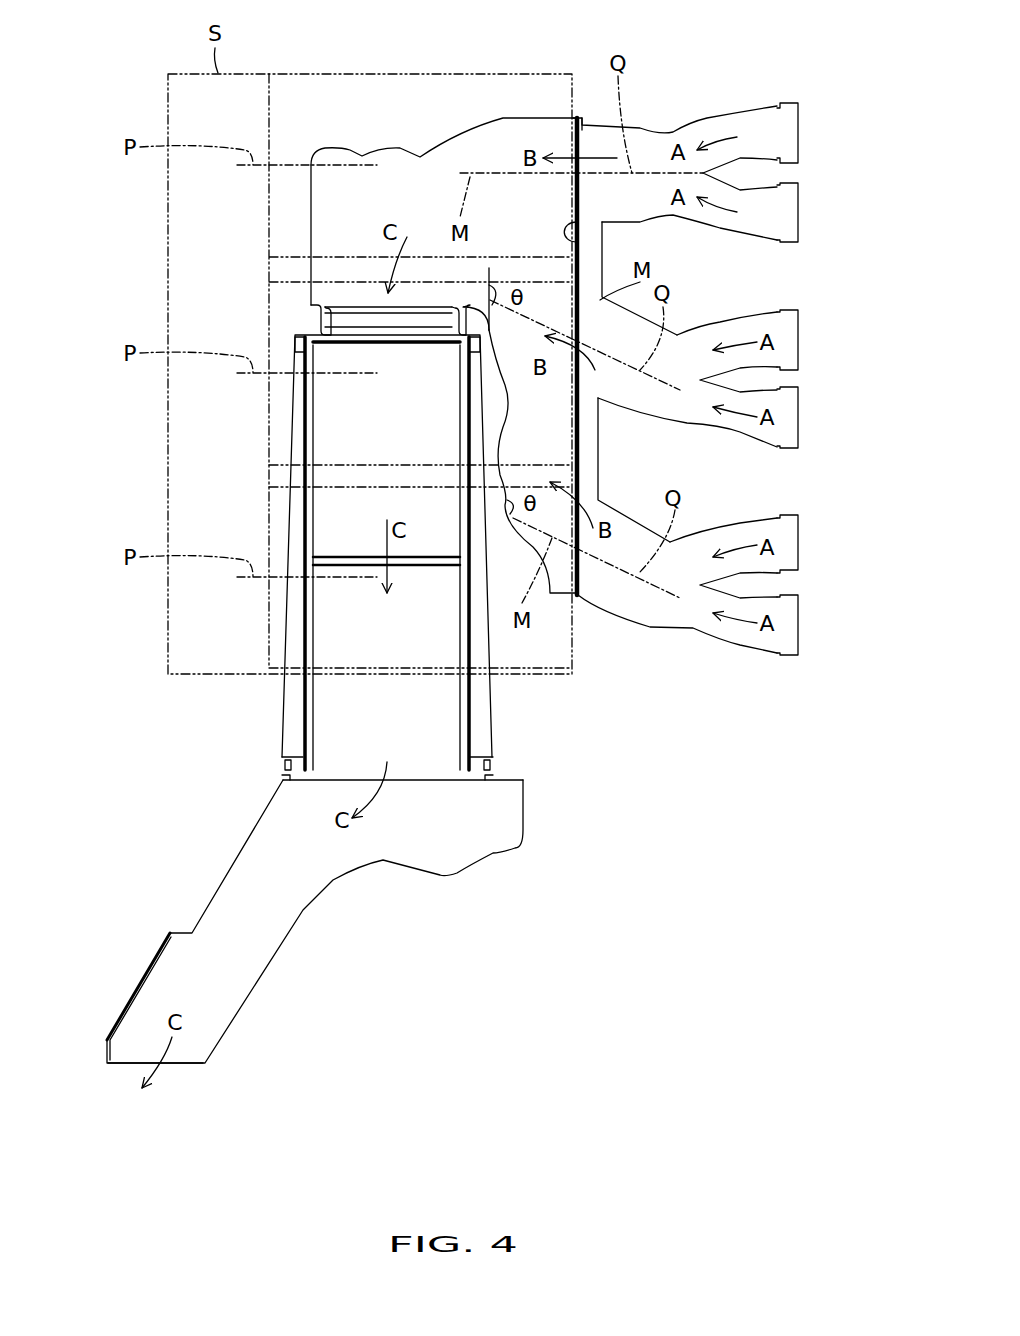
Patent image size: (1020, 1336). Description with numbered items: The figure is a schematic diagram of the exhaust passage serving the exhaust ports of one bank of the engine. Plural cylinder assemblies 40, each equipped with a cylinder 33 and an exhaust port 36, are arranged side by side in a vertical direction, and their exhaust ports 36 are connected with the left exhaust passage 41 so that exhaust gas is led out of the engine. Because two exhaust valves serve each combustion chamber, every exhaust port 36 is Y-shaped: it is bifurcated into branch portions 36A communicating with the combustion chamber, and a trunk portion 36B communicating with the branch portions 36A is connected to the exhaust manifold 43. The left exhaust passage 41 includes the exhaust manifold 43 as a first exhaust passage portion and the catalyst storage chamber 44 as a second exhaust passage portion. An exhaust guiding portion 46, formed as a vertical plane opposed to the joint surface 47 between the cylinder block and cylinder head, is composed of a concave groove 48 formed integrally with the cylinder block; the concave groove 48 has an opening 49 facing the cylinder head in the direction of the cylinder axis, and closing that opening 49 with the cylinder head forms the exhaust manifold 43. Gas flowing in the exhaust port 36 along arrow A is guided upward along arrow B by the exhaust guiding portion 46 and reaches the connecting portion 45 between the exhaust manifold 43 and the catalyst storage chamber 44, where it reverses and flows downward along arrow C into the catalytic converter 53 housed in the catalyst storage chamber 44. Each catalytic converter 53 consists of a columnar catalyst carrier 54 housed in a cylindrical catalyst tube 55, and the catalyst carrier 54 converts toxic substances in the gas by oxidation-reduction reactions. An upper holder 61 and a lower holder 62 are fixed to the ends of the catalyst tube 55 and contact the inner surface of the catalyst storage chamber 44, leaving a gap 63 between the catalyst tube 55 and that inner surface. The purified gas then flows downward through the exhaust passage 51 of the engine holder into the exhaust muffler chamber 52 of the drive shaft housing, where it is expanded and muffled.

The cylinder 33 is at (263, 213).
The cylinder assembly 40 is at (263, 418).
The exhaust port 36 is at (702, 398).
The branch portion 36A is at (770, 200).
The trunk portion 36B is at (650, 140).
The left exhaust passage 41 is at (458, 124).
The exhaust manifold 43 is at (505, 195).
The catalyst storage chamber 44 is at (490, 723).
The connecting portion 45 is at (367, 193).
The exhaust guiding portion 46 is at (594, 461).
The joint surface 47 is at (580, 237).
The concave groove 48 is at (503, 427).
The opening 49 is at (577, 412).
The exhaust passage 51 is at (265, 953).
The exhaust muffler chamber 52 is at (167, 1146).
The catalytic converter 53 is at (413, 760).
The catalyst carrier 54 is at (353, 723).
The catalyst tube 55 is at (470, 697).
The upper holder 61 is at (313, 318).
The lower holder 62 is at (480, 763).
The gap 63 is at (293, 722).